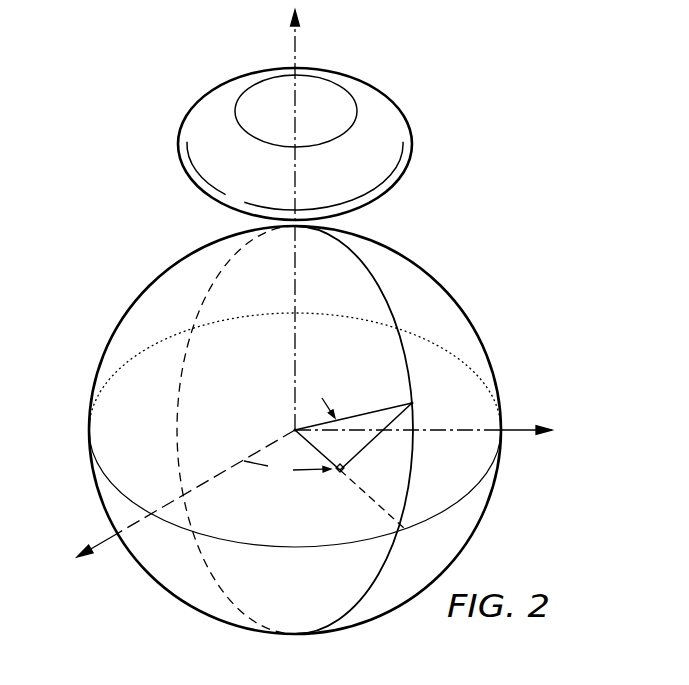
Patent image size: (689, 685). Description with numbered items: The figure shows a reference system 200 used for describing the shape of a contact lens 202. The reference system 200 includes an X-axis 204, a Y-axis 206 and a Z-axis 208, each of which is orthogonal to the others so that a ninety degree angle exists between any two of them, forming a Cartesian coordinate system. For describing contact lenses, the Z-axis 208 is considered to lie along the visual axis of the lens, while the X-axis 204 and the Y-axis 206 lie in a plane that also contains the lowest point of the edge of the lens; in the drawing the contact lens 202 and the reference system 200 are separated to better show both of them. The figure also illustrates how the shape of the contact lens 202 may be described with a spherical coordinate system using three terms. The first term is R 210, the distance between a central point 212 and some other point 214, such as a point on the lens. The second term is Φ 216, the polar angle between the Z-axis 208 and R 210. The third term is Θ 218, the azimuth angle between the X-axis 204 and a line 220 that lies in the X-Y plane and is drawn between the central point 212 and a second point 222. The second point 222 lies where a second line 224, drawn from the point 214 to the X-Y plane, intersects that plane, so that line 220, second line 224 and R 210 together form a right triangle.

The reference system 200 is at (157, 278).
The contact lens 202 is at (237, 84).
The X-axis 204 is at (103, 539).
The Y-axis 206 is at (518, 428).
The Z-axis 208 is at (296, 43).
The R 210 is at (413, 402).
The central point 212 is at (293, 429).
The point 214 is at (414, 405).
The Φ 216 is at (297, 373).
The Θ 218 is at (244, 462).
The line 220 is at (309, 446).
The second point 222 is at (338, 478).
The second line 224 is at (367, 446).